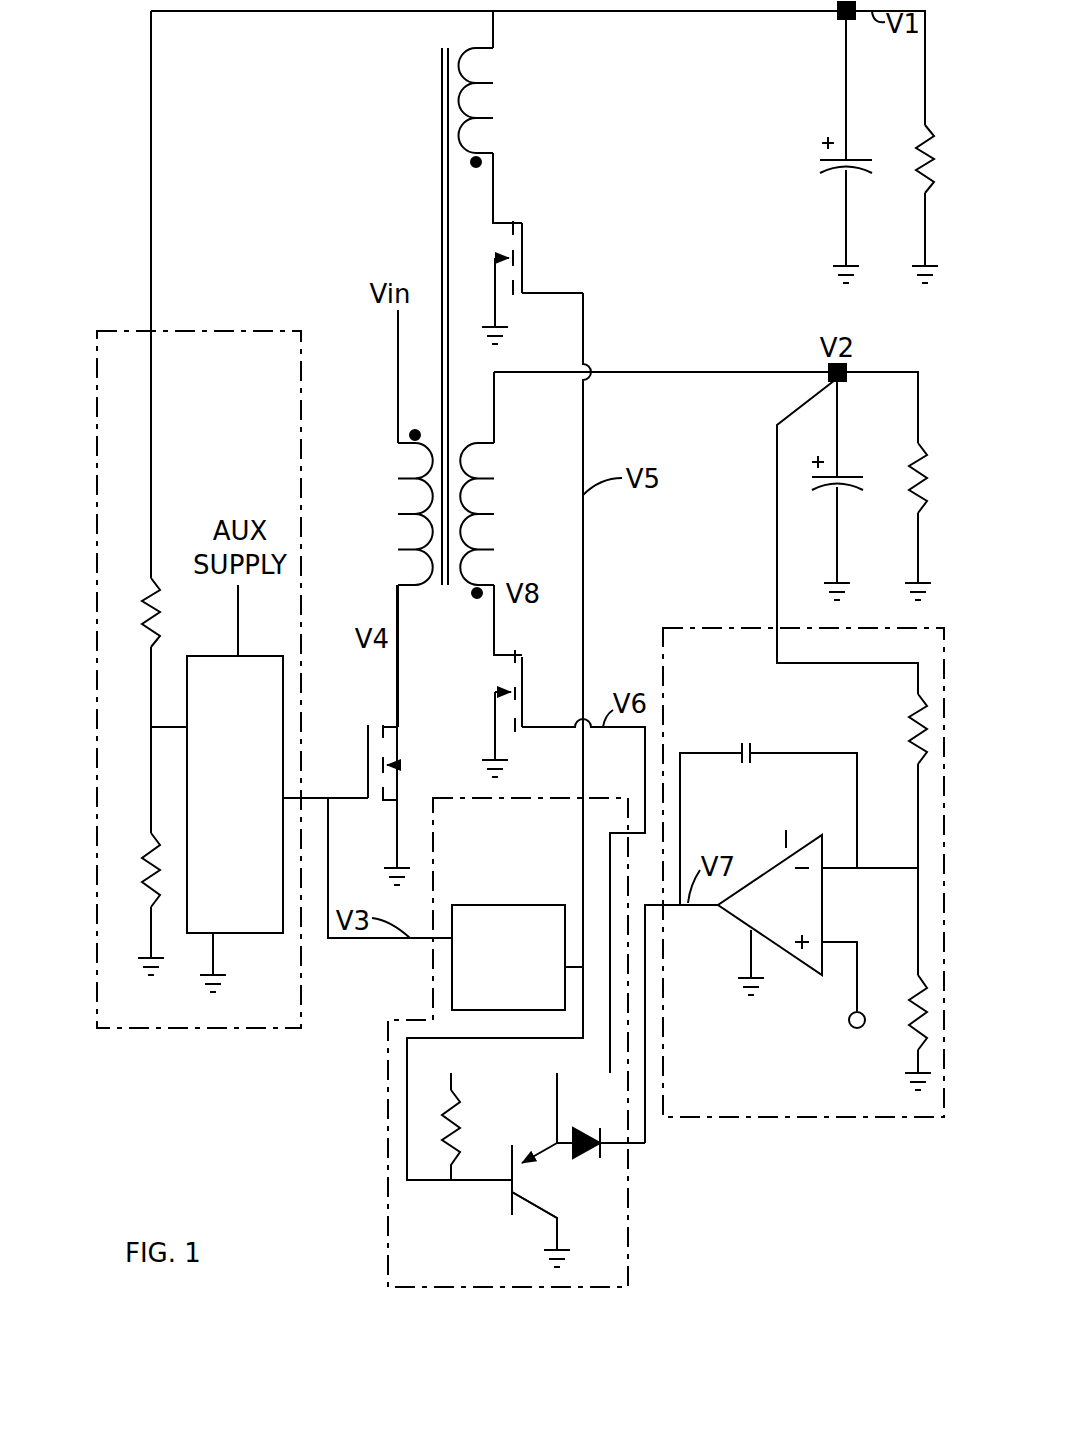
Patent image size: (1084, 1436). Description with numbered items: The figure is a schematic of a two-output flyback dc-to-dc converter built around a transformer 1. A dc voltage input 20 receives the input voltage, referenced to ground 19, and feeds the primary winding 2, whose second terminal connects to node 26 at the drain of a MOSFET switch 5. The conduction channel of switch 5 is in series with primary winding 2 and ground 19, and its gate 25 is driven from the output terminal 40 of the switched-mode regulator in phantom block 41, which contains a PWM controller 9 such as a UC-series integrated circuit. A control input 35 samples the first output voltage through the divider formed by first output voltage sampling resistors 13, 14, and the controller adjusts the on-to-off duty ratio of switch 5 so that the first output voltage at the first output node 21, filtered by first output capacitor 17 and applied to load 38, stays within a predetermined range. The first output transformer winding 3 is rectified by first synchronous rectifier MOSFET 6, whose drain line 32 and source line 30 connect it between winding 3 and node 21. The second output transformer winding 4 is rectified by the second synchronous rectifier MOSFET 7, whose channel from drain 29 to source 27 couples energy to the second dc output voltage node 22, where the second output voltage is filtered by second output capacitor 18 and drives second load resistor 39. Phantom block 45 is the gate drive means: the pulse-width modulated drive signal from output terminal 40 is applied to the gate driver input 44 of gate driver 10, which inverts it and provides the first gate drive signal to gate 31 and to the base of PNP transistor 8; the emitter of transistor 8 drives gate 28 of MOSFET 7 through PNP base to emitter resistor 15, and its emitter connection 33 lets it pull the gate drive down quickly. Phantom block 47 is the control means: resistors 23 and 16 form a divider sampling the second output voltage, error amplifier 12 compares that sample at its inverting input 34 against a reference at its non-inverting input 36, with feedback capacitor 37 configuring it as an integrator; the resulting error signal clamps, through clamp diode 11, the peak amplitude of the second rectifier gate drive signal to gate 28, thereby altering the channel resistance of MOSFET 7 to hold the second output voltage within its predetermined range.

The transformer 1 is at (442, 83).
The primary winding 2 is at (412, 515).
The first output transformer winding 3 is at (475, 80).
The second output transformer winding 4 is at (482, 515).
The MOSFET switch 5 is at (355, 718).
The first synchronous rectifier MOSFET 6 is at (552, 228).
The second synchronous rectifier MOSFET 7 is at (478, 658).
The PNP transistor 8 is at (500, 1200).
The PWM controller 9 is at (222, 849).
The gate driver 10 is at (494, 1008).
The clamp diode 11 is at (590, 1160).
The error amplifier 12 is at (764, 918).
The first output voltage sampling resistor 13 is at (162, 640).
The second first output voltage sampling resistor 14 is at (148, 880).
The PNP base to emitter resistor 15 is at (460, 1115).
The resistor 16 is at (918, 1048).
The first output capacitor 17 is at (815, 175).
The second output capacitor 18 is at (845, 497).
The ground 19 is at (150, 955).
The dc voltage input 20 is at (397, 348).
The first output node 21 is at (836, 13).
The second dc output voltage node 22 is at (728, 372).
The resistor 23 is at (910, 693).
The gate 25 is at (368, 790).
The node 26 is at (395, 600).
The source 27 is at (495, 740).
The gate 28 is at (535, 727).
The drain 29 is at (522, 640).
The source line of MOSFET 6 30 is at (515, 300).
The gate 31 is at (420, 1180).
The drain line of MOSFET 6 32 is at (507, 156).
The emitter of transistor 8 33 is at (547, 1222).
The inverting input 34 is at (830, 875).
The control input 35 is at (150, 727).
The capacitor 36 is at (857, 942).
The feedback capacitor 37 is at (750, 745).
The load 38 is at (918, 170).
The second load resistor 39 is at (913, 447).
The output terminal 40 is at (287, 798).
The phantom block 41 is at (205, 439).
The gate driver input 44 is at (447, 945).
The phantom block 45 is at (490, 858).
The phantom block 47 is at (727, 693).